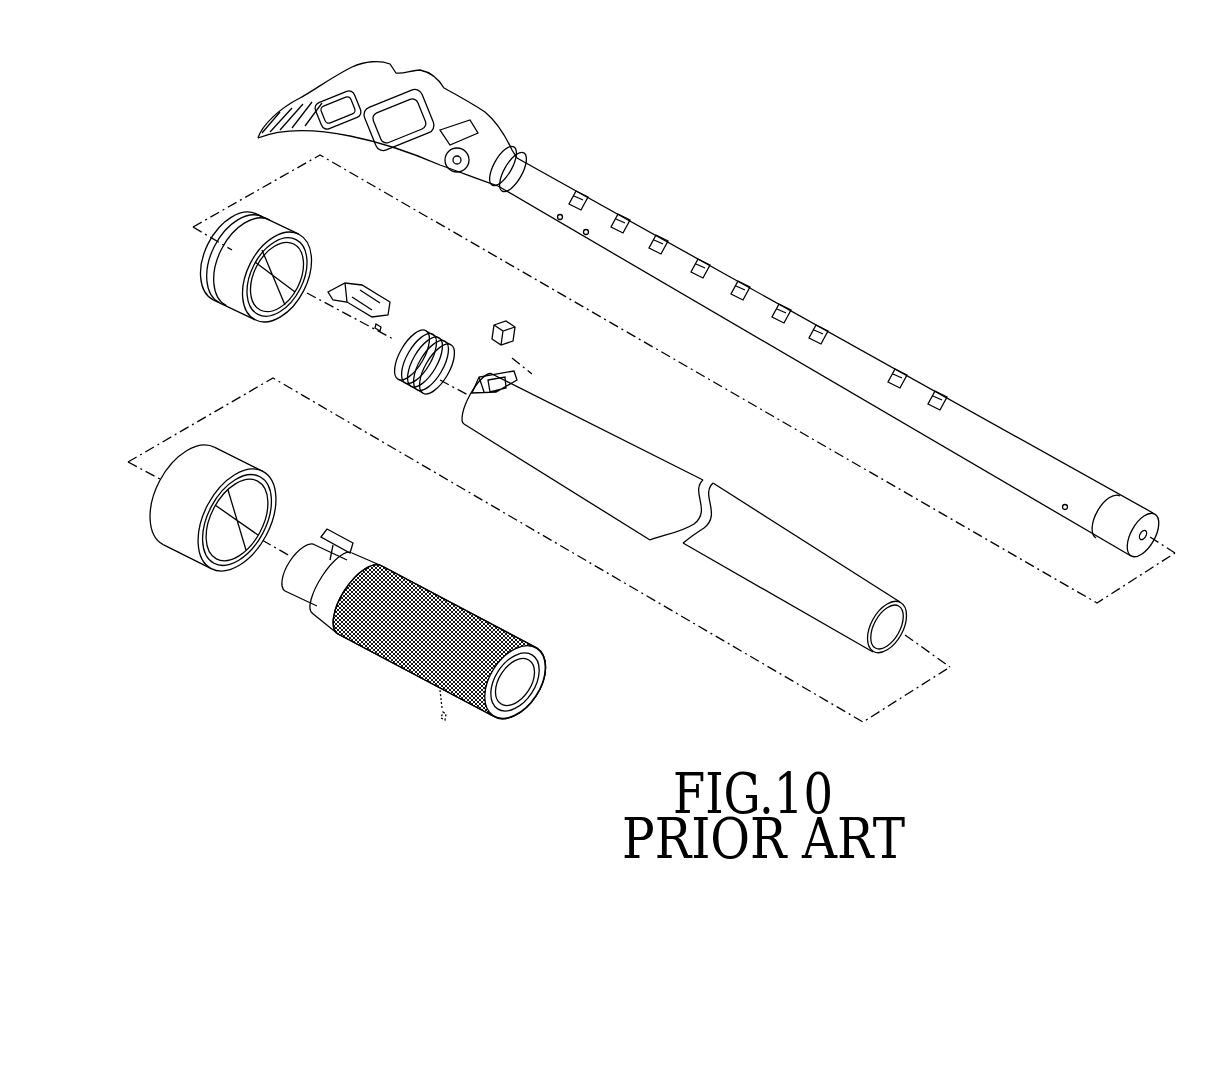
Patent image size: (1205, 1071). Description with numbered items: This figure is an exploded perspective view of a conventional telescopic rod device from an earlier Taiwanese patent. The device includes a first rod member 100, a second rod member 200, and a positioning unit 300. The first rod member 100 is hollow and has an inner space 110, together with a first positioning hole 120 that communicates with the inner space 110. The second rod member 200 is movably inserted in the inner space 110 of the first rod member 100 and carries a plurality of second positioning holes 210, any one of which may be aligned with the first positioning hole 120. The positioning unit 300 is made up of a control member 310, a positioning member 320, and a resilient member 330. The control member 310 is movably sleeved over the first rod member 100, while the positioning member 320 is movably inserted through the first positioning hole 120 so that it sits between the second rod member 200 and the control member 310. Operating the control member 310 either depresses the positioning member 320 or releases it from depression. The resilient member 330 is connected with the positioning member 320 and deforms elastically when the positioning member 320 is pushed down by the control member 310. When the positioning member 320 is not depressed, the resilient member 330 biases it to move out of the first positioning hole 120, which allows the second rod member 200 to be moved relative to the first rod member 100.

The first rod member 100 is at (784, 526).
The inner space 110 is at (896, 617).
The first positioning hole 120 is at (484, 376).
The second rod member 200 is at (703, 228).
The second positioning holes 210 is at (579, 188).
The positioning unit 300 is at (241, 615).
The control member 310 is at (177, 543).
The positioning member 320 is at (503, 322).
The resilient member 330 is at (361, 281).